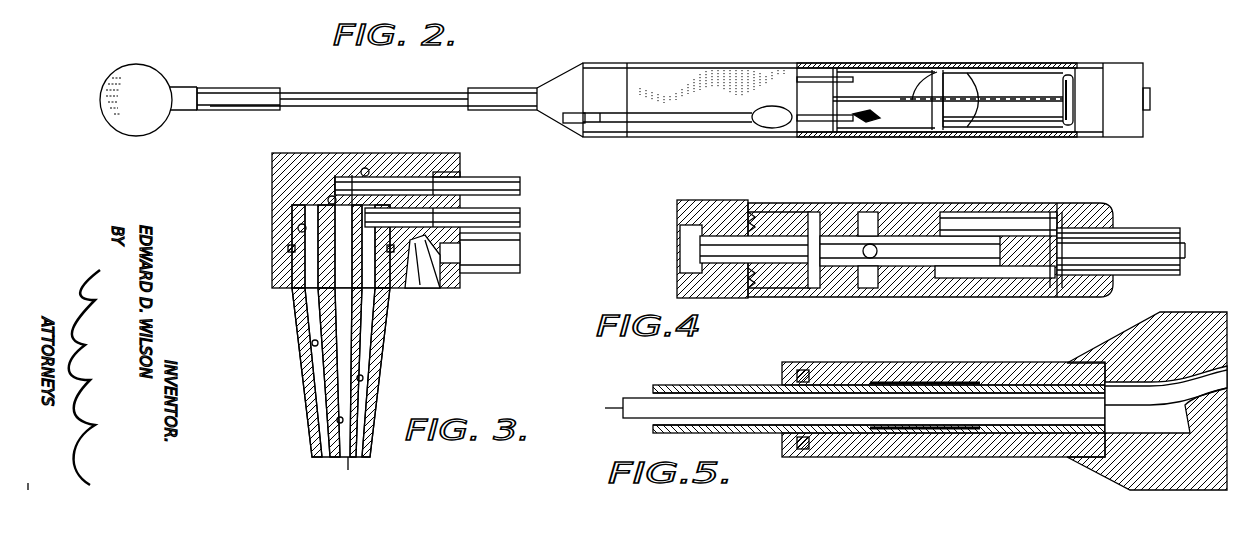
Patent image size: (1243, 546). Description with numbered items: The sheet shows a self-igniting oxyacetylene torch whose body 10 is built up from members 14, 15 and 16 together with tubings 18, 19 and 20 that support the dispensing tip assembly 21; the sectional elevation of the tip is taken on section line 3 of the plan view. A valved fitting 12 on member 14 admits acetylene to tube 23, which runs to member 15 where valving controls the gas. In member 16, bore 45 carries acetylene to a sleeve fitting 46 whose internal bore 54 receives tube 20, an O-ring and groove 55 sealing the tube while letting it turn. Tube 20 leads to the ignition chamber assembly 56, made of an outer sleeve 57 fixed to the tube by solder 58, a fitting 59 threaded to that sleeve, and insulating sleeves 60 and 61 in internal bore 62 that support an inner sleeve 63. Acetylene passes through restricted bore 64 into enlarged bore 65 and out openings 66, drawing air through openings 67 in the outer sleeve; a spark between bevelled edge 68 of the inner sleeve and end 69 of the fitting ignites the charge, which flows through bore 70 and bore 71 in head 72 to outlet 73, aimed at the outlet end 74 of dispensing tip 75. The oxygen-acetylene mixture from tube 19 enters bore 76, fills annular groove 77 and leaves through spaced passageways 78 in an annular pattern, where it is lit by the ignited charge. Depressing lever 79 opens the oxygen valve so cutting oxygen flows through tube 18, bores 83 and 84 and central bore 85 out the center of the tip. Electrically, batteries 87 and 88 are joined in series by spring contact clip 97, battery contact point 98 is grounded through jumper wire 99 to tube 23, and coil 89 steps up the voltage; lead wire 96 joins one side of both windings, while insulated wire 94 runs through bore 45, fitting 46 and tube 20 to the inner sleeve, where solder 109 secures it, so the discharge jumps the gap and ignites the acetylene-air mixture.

In FIG. 2, the section line 3— 3 is at (93, 99).
In FIG. 2, the body 10 is at (997, 58).
In FIG. 2, the valved fitting 12 is at (1150, 99).
In FIG. 2, the member 14 is at (1090, 78).
In FIG. 2, the member 15 is at (810, 95).
In FIG. 2, the member 16 is at (605, 64).
In FIG. 5, the member 16 is at (1150, 325).
In FIG. 2, the tube 18 is at (380, 92).
In FIG. 3, the tube 18 is at (492, 178).
In FIG. 3, the tube 19 is at (520, 212).
In FIG. 4, the tube 20 is at (1154, 228).
In FIG. 5, the tube 20 is at (672, 385).
In FIG. 2, the dispensing tip assembly 21 is at (125, 127).
In FIG. 3, the dispensing tip assembly 21 is at (288, 310).
In FIG. 4, the dispensing tip assembly 21 is at (730, 198).
In FIG. 2, the tube 23 is at (900, 95).
In FIG. 5, the bore 45 is at (1178, 345).
In FIG. 2, the sleeve fitting 46 is at (497, 88).
In FIG. 5, the sleeve fitting 46 is at (990, 362).
In FIG. 5, the internal bore 54 is at (803, 440).
In FIG. 5, the O-ring and groove 55 is at (820, 440).
In FIG. 2, the ignition chamber assembly 56 is at (266, 86).
In FIG. 3, the ignition chamber assembly 56 is at (519, 253).
In FIG. 4, the ignition chamber assembly 56 is at (1036, 200).
In FIG. 2, the outer sleeve 57 is at (268, 111).
In FIG. 3, the outer sleeve 57 is at (492, 250).
In FIG. 4, the outer sleeve 57 is at (960, 204).
In FIG. 4, the solder 58 is at (1114, 228).
In FIG. 3, the fitting 59 is at (461, 290).
In FIG. 4, the fitting 59 is at (756, 207).
In FIG. 4, the insulating sleeve 60 is at (850, 278).
In FIG. 4, the insulating sleeve 61 is at (938, 278).
In FIG. 4, the internal bore 62 is at (912, 268).
In FIG. 4, the inner sleeve 63 is at (992, 268).
In FIG. 4, the restricted bore 64 is at (1000, 240).
In FIG. 4, the enlarged bore 65 is at (907, 238).
In FIG. 4, the openings 66 is at (870, 220).
In FIG. 4, the openings 67 is at (870, 260).
In FIG. 4, the bevelled edge 68 is at (816, 224).
In FIG. 4, the end 69 is at (814, 262).
In FIG. 4, the bore 70 is at (752, 256).
In FIG. 3, the bore 71 is at (425, 268).
In FIG. 4, the bore 71 is at (690, 238).
In FIG. 3, the head 72 is at (458, 152).
In FIG. 3, the outlet 73 is at (415, 290).
In FIG. 3, the outlet end 74 is at (348, 465).
In FIG. 3, the dispensing tip 75 is at (372, 360).
In FIG. 3, the bore 76 is at (410, 175).
In FIG. 3, the annular groove 77 is at (298, 228).
In FIG. 3, the passageways 78 is at (312, 344).
In FIG. 2, the lever 79 is at (662, 123).
In FIG. 3, the bore 83 is at (365, 168).
In FIG. 3, the bore 84 is at (328, 200).
In FIG. 3, the central bore 85 is at (337, 420).
In FIG. 2, the battery 87 is at (1030, 80).
In FIG. 2, the battery 88 is at (1050, 116).
In FIG. 2, the coil 89 is at (868, 80).
In FIG. 2, the wire 94 is at (818, 78).
In FIG. 4, the wire 94 is at (1180, 250).
In FIG. 5, the wire 94 is at (1172, 392).
In FIG. 2, the lead wire 96 is at (812, 122).
In FIG. 2, the spring contact clip 97 is at (1068, 78).
In FIG. 2, the battery contact point 98 is at (950, 73).
In FIG. 2, the jumper wire 99 is at (937, 70).
In FIG. 4, the solder 109 is at (1052, 272).